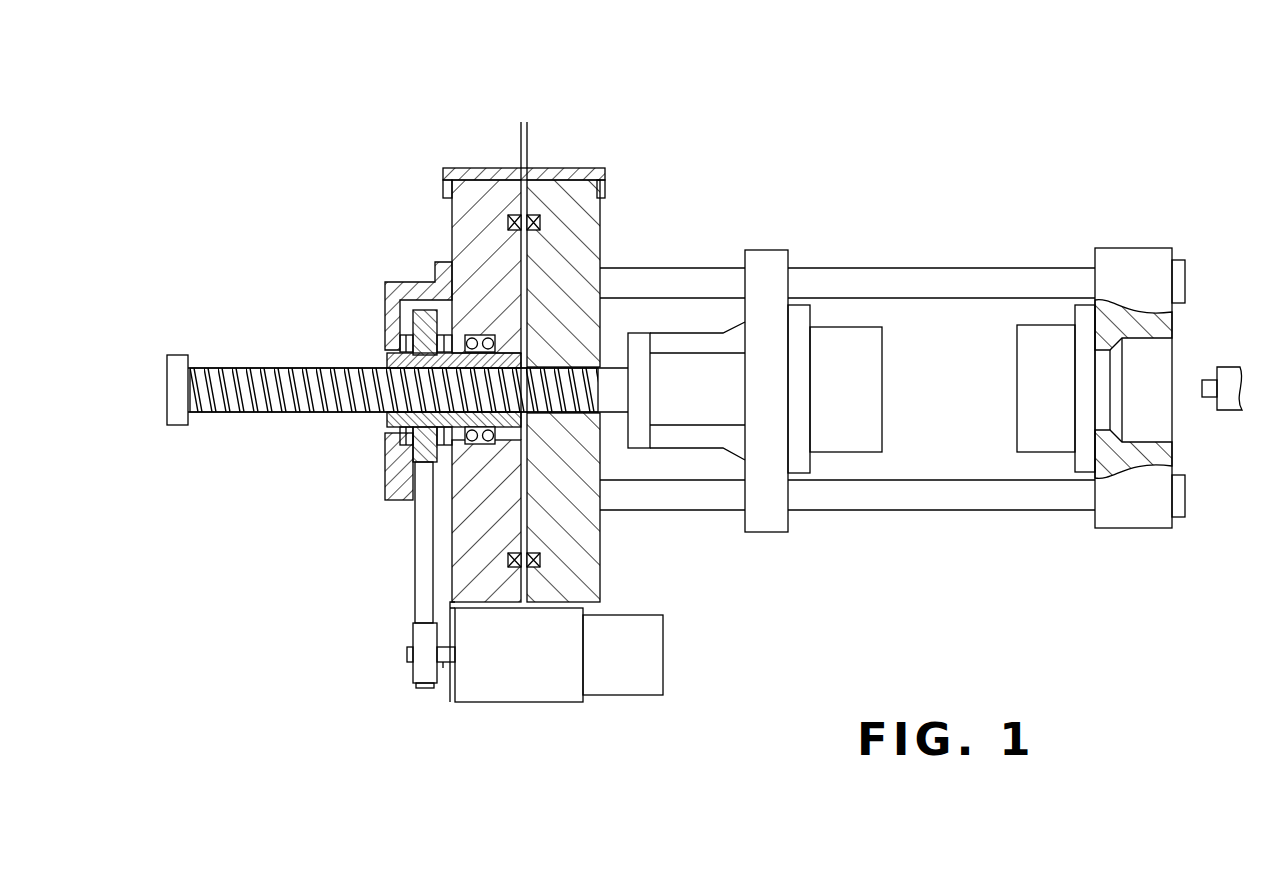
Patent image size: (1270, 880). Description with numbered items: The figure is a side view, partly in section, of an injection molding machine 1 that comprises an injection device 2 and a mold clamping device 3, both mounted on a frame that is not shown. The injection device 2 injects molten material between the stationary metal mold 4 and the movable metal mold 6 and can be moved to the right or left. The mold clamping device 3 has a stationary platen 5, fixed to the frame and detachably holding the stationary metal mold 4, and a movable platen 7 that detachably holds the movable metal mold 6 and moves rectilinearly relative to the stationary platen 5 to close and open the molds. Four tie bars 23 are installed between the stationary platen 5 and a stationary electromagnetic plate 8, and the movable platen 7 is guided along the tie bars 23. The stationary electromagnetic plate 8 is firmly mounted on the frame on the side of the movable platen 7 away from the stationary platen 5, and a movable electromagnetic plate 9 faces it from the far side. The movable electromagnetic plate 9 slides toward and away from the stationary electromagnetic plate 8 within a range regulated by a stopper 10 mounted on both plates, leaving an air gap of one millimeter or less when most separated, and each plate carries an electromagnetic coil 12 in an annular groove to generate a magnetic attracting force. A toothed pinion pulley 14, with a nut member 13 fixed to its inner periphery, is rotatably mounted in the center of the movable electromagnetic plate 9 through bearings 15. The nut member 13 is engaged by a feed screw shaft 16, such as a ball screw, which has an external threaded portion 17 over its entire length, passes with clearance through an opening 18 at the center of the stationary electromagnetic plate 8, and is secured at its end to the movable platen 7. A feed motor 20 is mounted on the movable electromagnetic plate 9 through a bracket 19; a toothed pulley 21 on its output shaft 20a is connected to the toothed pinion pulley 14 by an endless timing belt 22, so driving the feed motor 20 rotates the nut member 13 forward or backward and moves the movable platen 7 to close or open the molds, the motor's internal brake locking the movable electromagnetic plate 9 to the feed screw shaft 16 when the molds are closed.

The injection molding machine 1 is at (717, 398).
The injection device 2 is at (1233, 367).
The mold clamping device 3 is at (469, 430).
The stationary metal mold 4 is at (1027, 362).
The stationary platen 5 is at (1130, 258).
The movable metal mold 6 is at (870, 360).
The movable platen 7 is at (778, 256).
The stationary electromagnetic plate 8 is at (600, 208).
The movable electromagnetic plate 9 is at (456, 247).
The stopper 10 is at (598, 172).
The electromagnetic coil 12 is at (533, 214).
The nut member 13 is at (390, 362).
The toothed pinion pulley 14 is at (388, 300).
The bearings 15 is at (490, 334).
The feed screw shaft 16 is at (383, 381).
The external threaded portion 17 is at (308, 413).
The opening 18 is at (556, 370).
The bracket 19 is at (447, 605).
The feed motor 20 is at (540, 688).
The output shaft 20a is at (441, 668).
The toothed pulley 21 is at (413, 665).
The endless timing belt 22 is at (420, 520).
The tie bars 23 is at (930, 270).